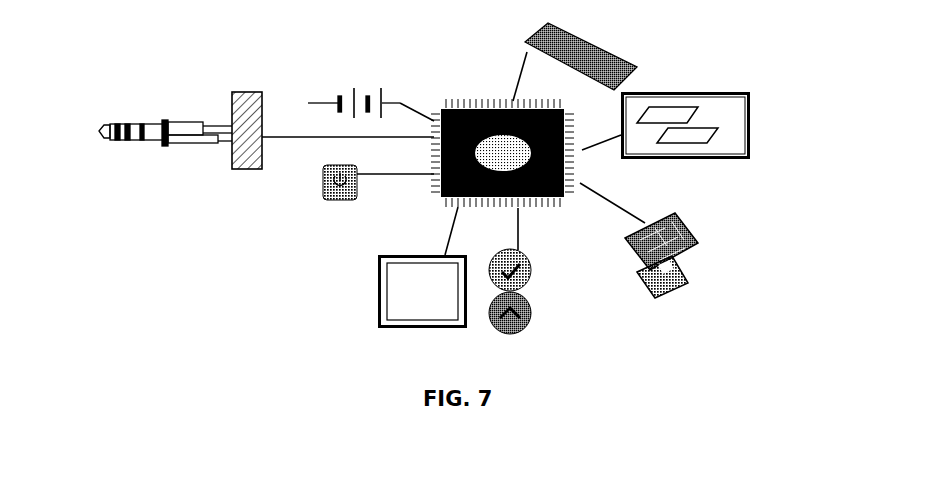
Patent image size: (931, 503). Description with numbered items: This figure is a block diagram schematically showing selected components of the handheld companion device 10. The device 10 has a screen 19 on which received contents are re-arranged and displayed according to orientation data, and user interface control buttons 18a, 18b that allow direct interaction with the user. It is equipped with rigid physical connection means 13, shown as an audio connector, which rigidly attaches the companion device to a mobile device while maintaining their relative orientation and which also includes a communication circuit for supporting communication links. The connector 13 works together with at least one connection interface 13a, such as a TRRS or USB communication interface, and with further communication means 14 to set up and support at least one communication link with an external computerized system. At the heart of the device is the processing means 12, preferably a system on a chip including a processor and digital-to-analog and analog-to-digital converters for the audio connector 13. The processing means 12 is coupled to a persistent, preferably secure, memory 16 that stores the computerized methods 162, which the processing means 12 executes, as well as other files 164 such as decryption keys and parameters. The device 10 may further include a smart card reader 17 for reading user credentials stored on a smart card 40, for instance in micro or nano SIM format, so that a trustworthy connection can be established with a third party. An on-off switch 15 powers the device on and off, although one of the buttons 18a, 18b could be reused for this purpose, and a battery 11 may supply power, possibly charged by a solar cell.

The companion device 10 is at (244, 257).
The battery 11 is at (352, 85).
The processing means 12 is at (481, 101).
The rigid physical connection means 13 is at (153, 152).
The connection interface 13a is at (257, 92).
The communication means 14 is at (634, 63).
The on-off switch 15 is at (323, 180).
The persistent memory 16 is at (666, 92).
The computerized methods 162 is at (698, 112).
The other files 164 is at (720, 135).
The smart card reader 17 is at (640, 287).
The control button 18a is at (533, 323).
The control button 18b is at (530, 264).
The screen 19 is at (378, 300).
The smart card 40 is at (676, 213).